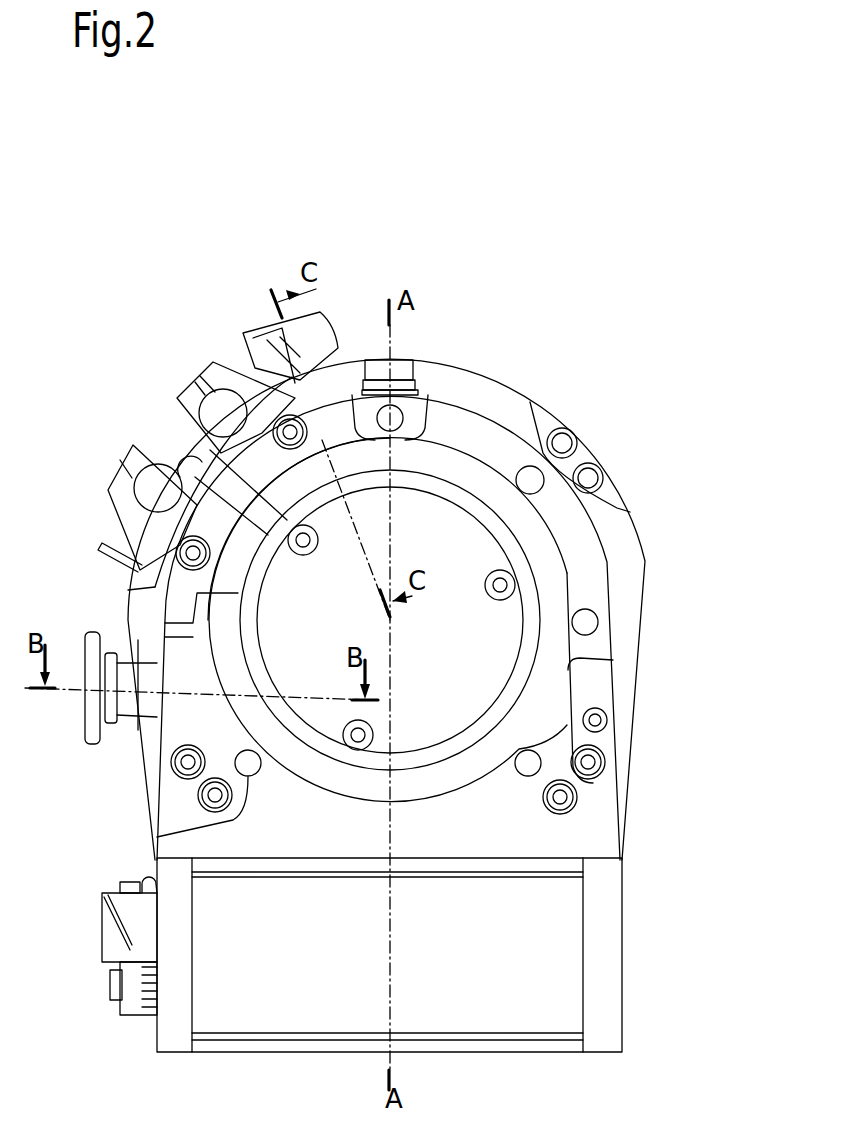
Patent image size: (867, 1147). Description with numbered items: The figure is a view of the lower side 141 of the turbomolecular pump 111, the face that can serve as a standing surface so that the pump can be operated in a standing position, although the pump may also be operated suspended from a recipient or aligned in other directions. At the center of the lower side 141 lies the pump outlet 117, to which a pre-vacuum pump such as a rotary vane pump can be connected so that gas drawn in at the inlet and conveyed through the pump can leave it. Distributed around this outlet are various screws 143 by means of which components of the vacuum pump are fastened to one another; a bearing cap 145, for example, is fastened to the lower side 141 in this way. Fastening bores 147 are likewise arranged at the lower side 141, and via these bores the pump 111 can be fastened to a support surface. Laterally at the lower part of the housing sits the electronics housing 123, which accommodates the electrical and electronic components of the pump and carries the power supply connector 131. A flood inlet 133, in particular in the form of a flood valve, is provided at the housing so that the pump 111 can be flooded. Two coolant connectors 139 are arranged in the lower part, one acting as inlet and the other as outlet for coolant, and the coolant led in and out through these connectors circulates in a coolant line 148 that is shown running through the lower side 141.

The turbomolecular pump 111 is at (120, 232).
The pump outlet 117 is at (87, 730).
The electronics housing 123 is at (623, 983).
The power supply connector 131 is at (102, 940).
The flood inlet 133 is at (322, 313).
The coolant connectors 139 is at (184, 464).
The lower side 141 is at (590, 563).
The screws 143 is at (578, 802).
The bearing cap 145 is at (586, 793).
The fastening bores 147 is at (528, 467).
The coolant line 148 is at (555, 606).